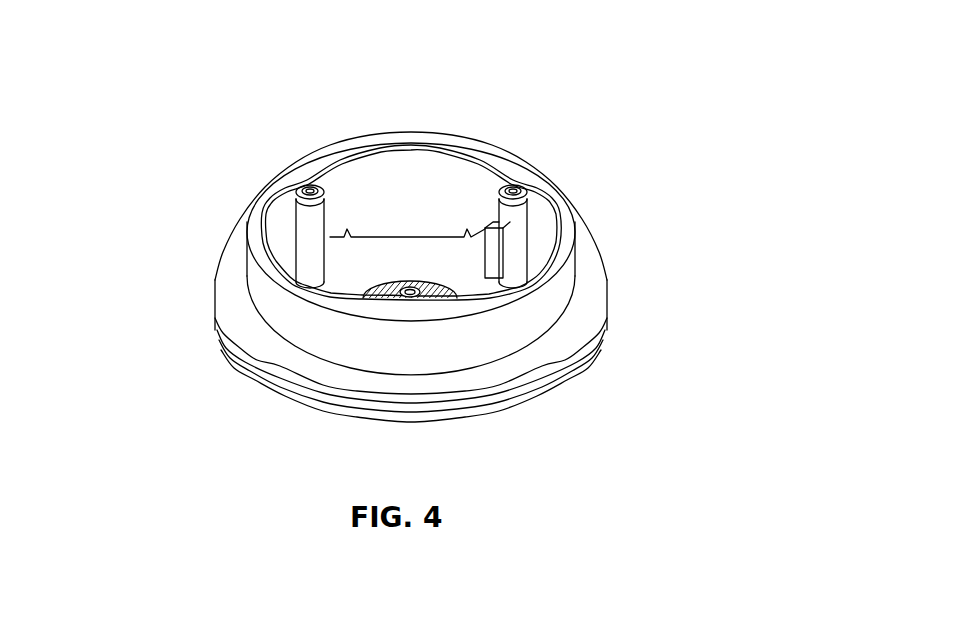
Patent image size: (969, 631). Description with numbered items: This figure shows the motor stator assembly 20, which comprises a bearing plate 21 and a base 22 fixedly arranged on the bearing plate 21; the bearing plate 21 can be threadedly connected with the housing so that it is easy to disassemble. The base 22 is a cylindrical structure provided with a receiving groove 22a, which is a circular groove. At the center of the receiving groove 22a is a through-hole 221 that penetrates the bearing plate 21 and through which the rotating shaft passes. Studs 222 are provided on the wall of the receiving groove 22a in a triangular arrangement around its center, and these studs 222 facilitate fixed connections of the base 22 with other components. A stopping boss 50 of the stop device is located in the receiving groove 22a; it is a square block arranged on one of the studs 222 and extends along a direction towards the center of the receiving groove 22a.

The motor stator assembly 20 is at (438, 130).
The bearing plate 21 is at (587, 308).
The base 22 is at (373, 144).
The receiving groove 22a is at (440, 172).
The through-hole 221 is at (367, 297).
The studs 222 is at (310, 233).
The stopping boss 50 is at (493, 250).